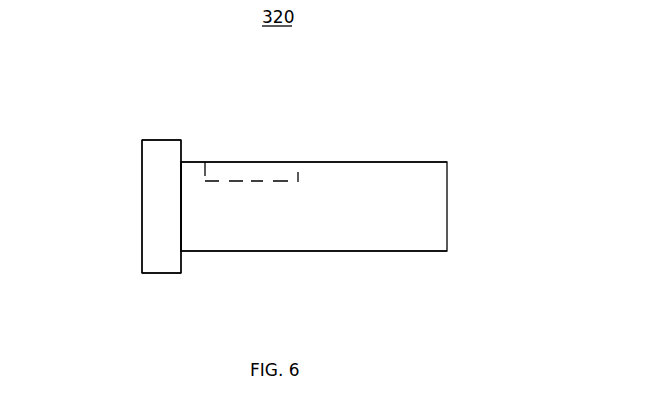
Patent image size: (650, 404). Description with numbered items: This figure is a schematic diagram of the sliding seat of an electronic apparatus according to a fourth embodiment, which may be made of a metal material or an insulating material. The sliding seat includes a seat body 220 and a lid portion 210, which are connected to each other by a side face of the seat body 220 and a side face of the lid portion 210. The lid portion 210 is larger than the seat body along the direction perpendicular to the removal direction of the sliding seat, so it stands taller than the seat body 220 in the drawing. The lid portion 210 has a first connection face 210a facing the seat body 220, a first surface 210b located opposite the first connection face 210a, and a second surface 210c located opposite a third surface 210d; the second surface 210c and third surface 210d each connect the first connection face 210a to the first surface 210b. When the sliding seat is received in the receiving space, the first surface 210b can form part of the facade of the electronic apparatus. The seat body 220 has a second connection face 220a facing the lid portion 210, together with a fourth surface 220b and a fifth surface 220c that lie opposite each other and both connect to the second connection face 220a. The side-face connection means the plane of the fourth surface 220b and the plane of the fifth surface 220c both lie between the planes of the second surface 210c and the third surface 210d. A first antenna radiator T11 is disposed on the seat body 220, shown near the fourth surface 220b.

The lid portion 210 is at (153, 220).
The first connection face 210a is at (183, 254).
The first surface 210b is at (140, 250).
The second surface 210c is at (156, 138).
The third surface 210d is at (164, 275).
The seat body 220 is at (425, 202).
The second connection face 220a is at (178, 188).
The fourth surface 220b is at (338, 160).
The fifth surface 220c is at (352, 253).
The first antenna radiator T11 is at (250, 180).